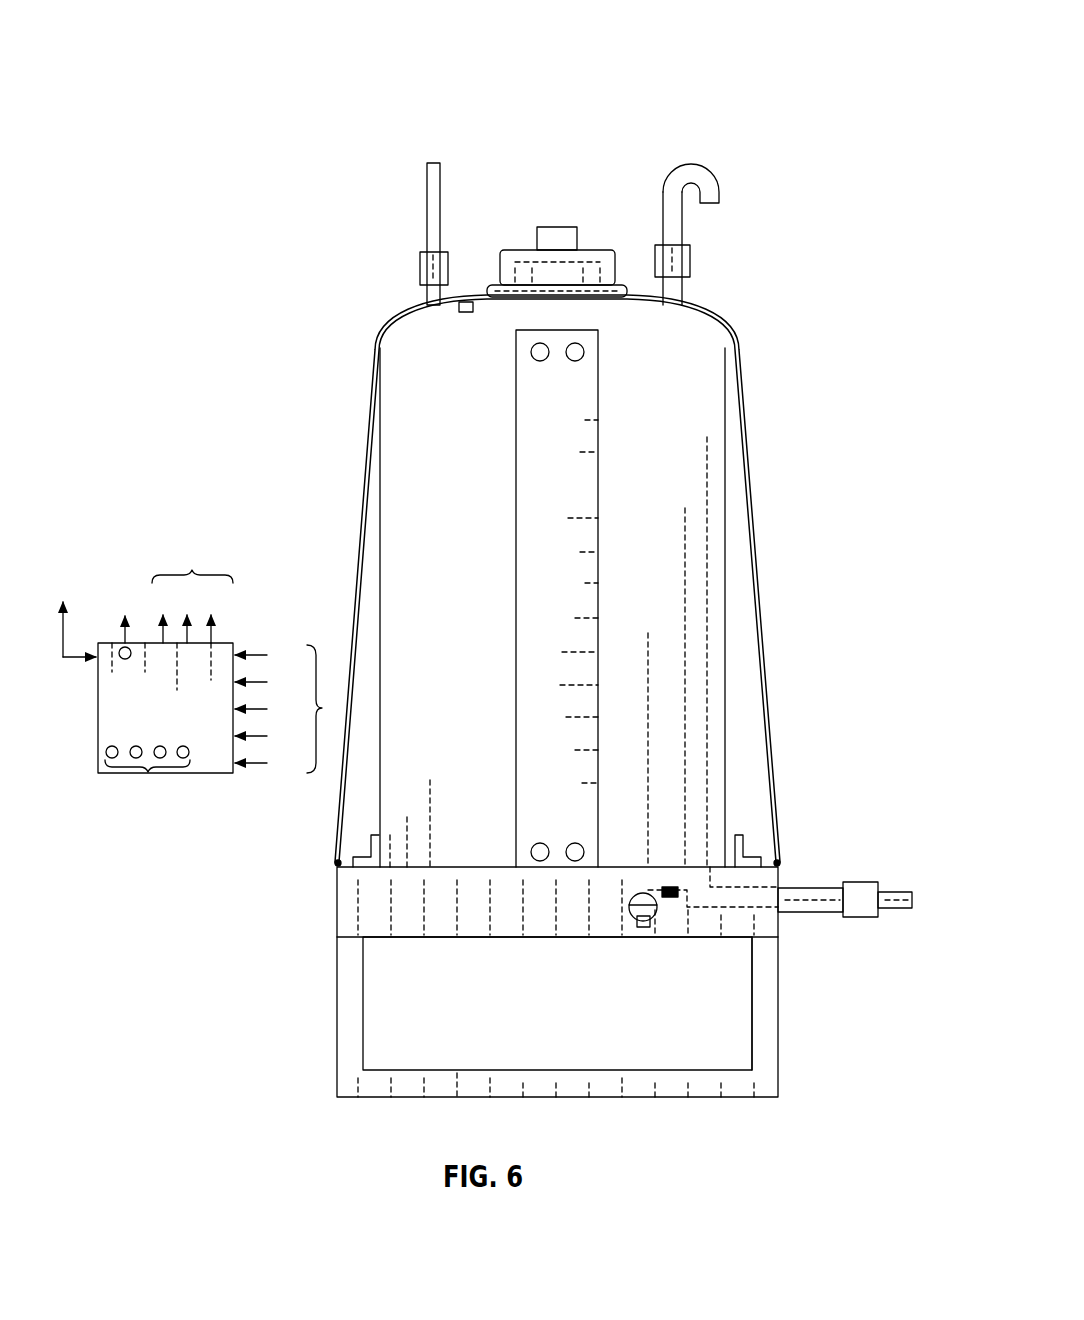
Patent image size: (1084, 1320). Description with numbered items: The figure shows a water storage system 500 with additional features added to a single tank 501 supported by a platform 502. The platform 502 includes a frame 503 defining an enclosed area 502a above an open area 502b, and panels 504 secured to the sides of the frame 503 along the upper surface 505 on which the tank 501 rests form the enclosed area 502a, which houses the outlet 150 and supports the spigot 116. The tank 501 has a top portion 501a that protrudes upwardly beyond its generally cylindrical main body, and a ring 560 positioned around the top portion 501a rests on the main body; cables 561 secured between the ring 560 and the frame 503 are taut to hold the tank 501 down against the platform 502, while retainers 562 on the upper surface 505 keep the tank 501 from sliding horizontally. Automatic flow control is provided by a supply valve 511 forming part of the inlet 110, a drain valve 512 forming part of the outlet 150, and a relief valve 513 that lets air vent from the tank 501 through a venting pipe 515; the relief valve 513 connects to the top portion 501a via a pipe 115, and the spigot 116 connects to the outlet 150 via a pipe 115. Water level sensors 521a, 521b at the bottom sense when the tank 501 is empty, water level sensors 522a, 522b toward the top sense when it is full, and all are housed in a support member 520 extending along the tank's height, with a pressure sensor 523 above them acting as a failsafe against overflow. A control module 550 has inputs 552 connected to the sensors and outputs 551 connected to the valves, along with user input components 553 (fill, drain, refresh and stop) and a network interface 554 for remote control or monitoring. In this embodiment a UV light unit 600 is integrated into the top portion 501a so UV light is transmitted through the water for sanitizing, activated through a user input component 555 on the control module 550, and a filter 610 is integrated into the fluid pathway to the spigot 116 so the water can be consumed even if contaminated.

The inlet 110 is at (363, 130).
The pipe 115 is at (427, 205).
The spigot 116 is at (643, 928).
The outlet 150 is at (801, 887).
The water storage system 500 is at (762, 92).
The tank 501 is at (764, 752).
The top portion 501a is at (621, 252).
The platform 502 is at (290, 966).
The enclosed area 502a is at (353, 907).
The open area 502b is at (393, 999).
The frame 503 is at (778, 1070).
The panel 504 is at (735, 940).
The upper surface 505 is at (337, 862).
The supply valve 511 is at (419, 260).
The drain valve 512 is at (860, 881).
The relief valve 513 is at (690, 255).
The venting pipe 515 is at (713, 175).
The support member 520 is at (598, 604).
The water level sensor 521a is at (534, 862).
The water level sensor 521b is at (582, 845).
The water level sensor 522a is at (548, 360).
The water level sensor 522b is at (582, 347).
The pressure sensor 523 is at (476, 306).
The control module 550 is at (126, 523).
The outputs 551 is at (190, 575).
The inputs 552 is at (323, 707).
The user input components 553 is at (147, 772).
The network interface 554 is at (93, 666).
The user input component 555 is at (128, 659).
The ring 560 is at (625, 284).
The cables 561 is at (366, 546).
The retainers 562 is at (371, 840).
The UV light unit 600 is at (535, 247).
The filter 610 is at (672, 899).